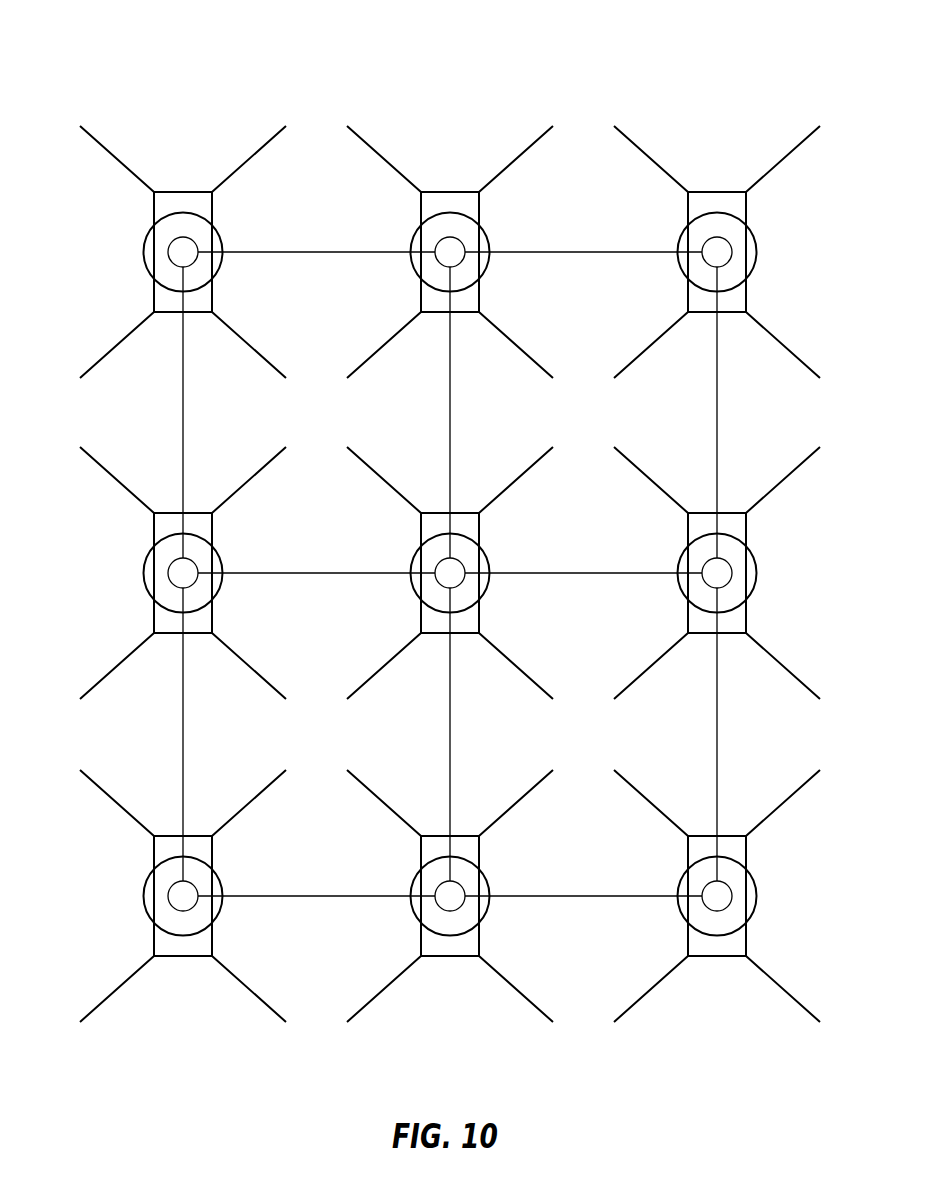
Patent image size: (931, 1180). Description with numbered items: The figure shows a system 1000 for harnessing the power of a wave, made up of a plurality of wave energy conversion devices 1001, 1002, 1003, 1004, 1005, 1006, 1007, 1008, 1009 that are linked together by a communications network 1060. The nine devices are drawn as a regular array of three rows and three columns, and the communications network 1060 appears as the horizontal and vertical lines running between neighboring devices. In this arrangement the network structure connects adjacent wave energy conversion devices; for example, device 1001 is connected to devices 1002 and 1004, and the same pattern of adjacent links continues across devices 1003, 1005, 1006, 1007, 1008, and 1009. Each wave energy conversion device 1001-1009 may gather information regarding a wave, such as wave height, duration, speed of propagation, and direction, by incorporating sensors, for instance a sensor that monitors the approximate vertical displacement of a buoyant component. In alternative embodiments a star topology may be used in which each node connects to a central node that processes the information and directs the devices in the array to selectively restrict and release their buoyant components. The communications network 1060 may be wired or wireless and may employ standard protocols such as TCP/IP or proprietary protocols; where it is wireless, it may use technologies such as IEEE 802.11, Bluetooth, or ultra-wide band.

The system 1000 is at (124, 91).
The wave energy conversion device 1001 is at (158, 211).
The wave energy conversion device 1002 is at (474, 205).
The wave energy conversion device 1003 is at (741, 205).
The wave energy conversion device 1004 is at (158, 533).
The wave energy conversion device 1005 is at (478, 530).
The wave energy conversion device 1006 is at (742, 530).
The wave energy conversion device 1007 is at (156, 858).
The wave energy conversion device 1008 is at (479, 853).
The wave energy conversion device 1009 is at (739, 857).
The communications network 1060 is at (321, 252).